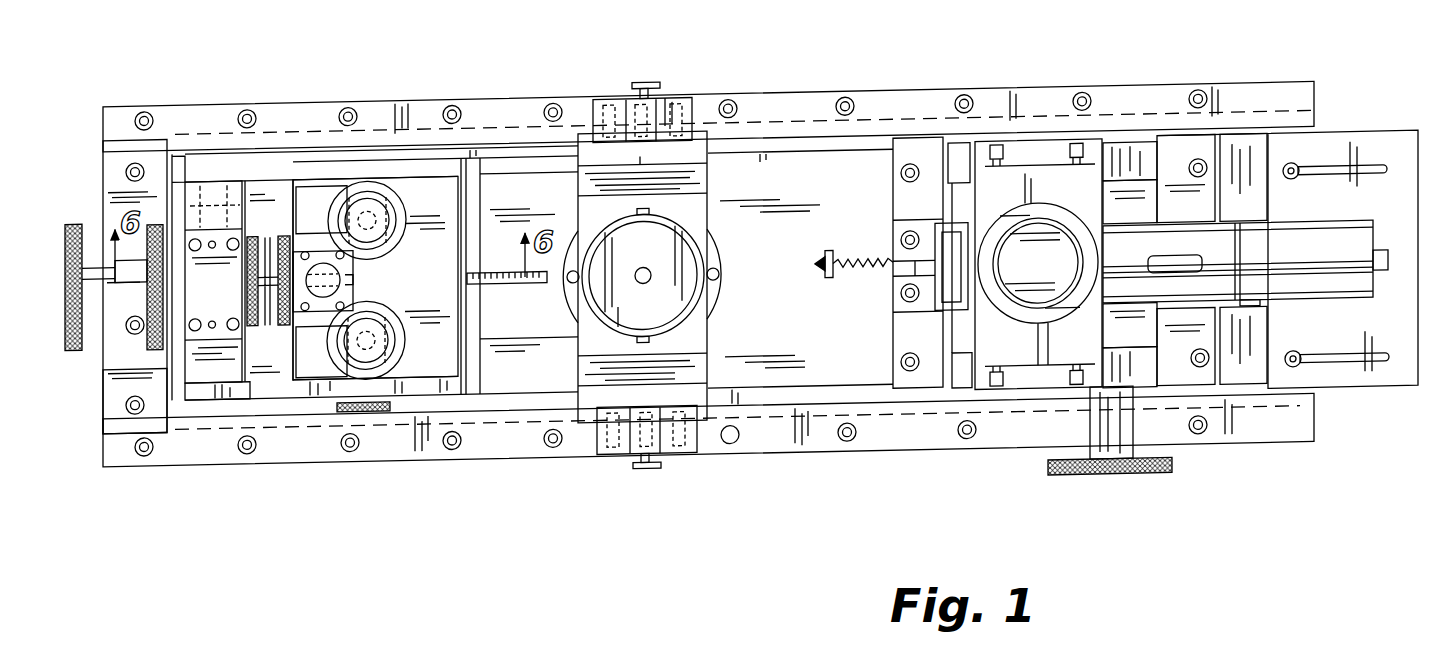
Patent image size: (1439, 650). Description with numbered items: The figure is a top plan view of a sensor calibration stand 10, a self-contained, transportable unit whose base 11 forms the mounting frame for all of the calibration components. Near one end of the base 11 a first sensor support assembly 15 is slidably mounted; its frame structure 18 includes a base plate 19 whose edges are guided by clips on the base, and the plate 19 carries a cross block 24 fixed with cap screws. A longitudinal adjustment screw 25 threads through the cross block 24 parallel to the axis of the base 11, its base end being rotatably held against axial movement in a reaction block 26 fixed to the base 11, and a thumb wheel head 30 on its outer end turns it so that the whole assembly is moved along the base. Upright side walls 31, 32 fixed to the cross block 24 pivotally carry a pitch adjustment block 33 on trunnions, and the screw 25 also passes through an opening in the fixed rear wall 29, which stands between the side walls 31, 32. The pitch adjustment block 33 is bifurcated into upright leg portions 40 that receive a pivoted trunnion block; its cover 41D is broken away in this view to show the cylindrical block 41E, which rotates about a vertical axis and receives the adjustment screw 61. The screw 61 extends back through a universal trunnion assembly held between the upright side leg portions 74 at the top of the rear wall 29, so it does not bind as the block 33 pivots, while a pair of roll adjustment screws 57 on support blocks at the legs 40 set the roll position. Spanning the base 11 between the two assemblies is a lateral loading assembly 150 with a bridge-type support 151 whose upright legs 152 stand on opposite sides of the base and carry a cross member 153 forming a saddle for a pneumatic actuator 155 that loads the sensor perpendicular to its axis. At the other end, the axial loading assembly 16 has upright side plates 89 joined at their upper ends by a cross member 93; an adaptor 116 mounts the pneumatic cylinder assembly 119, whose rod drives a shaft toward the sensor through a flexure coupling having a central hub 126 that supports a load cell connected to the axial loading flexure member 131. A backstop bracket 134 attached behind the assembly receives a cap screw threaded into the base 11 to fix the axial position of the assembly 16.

The sensor calibration stand 10 is at (1000, 88).
The base 11 is at (810, 470).
The first sensor support assembly 15 is at (403, 196).
The axial loading assembly 16 is at (1047, 185).
The frame structure 18 is at (320, 204).
The base plate 19 is at (262, 383).
The cross block 24 is at (445, 324).
The longitudinal adjustment screw 25 is at (530, 297).
The reaction block 26 is at (103, 159).
The rear wall 29 is at (176, 181).
The thumb wheel head 30 is at (75, 354).
The upright side wall 31 is at (262, 177).
The upright side wall 32 is at (200, 402).
The pitch adjustment block 33 is at (313, 369).
The upright leg portions 40 is at (295, 224).
The cover 41D is at (385, 309).
The cylindrical block 41E is at (388, 266).
The roll adjustment screws 57 is at (365, 196).
The adjustment screw 61 is at (350, 288).
The upright side leg portions 74 is at (212, 192).
The upright side plates 89 is at (958, 173).
The cross member 93 is at (1090, 360).
The adaptor 116 is at (1186, 320).
The pneumatic cylinder assembly 119 is at (1302, 258).
The central hub 126 is at (937, 249).
The axial loading flexure member 131 is at (856, 280).
The backstop bracket 134 is at (1363, 171).
The lateral loading assembly 150 is at (698, 143).
The bridge-type support 151 is at (700, 237).
The upright legs 152 is at (630, 116).
The cross member 153 is at (700, 408).
The pneumatic actuator 155 is at (668, 329).